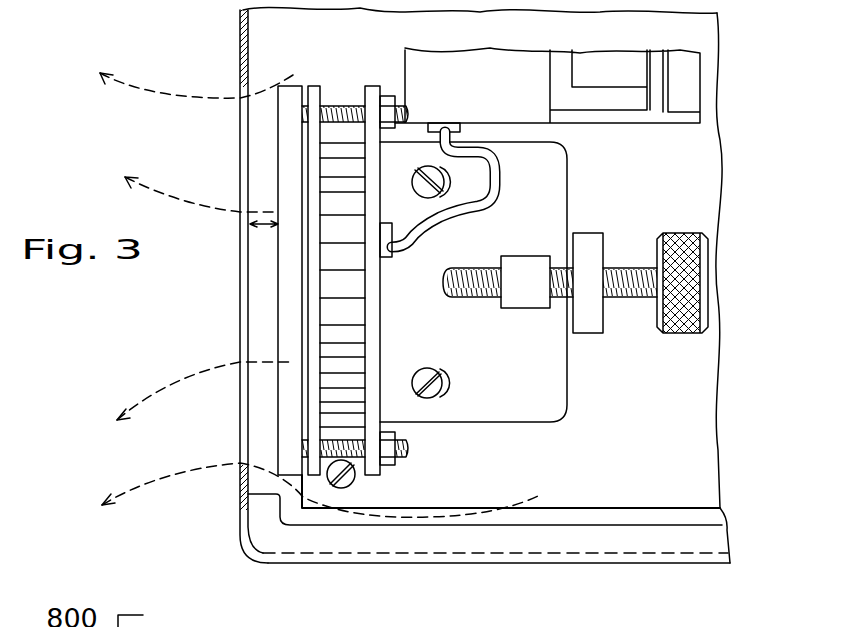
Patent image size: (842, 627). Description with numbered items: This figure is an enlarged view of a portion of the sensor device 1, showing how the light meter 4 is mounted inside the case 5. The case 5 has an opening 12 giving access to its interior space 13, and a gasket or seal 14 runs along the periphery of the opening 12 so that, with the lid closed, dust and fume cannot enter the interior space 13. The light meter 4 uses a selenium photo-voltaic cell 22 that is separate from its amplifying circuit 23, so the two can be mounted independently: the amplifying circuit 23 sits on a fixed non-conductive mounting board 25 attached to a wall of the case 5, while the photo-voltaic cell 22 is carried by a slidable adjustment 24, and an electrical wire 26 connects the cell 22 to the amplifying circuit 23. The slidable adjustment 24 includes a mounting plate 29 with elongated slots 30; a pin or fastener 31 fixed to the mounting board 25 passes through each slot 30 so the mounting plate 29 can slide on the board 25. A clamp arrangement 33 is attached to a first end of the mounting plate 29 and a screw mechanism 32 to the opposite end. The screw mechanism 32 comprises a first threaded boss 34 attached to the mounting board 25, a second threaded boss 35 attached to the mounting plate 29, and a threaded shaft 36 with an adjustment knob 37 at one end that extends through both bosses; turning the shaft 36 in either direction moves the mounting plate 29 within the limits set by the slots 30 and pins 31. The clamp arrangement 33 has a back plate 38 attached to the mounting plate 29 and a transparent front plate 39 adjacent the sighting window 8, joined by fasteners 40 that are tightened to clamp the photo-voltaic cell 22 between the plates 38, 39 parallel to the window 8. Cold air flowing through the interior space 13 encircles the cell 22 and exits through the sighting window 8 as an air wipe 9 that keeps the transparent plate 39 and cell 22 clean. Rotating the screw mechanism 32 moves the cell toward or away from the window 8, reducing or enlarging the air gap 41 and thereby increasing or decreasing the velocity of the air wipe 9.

The sensor device 1 is at (742, 66).
The light meter 4 is at (331, 157).
The case 5 is at (530, 563).
The sighting window 8 is at (240, 318).
The air wipe 9 is at (162, 472).
The opening 12 is at (604, 523).
The interior space 13 is at (610, 462).
The gasket or seal 14 is at (483, 543).
The photo-voltaic cell 22 is at (352, 310).
The amplifying circuit 23 is at (585, 105).
The slidable adjustment 24 is at (580, 377).
The non-conductive mounting board 25 is at (670, 464).
The electrical wire 26 is at (500, 172).
The mounting plate 29 is at (522, 405).
The elongated slots 30 is at (452, 383).
The pin or fastener 31 is at (420, 398).
The screw mechanism 32 is at (626, 265).
The clamp arrangement 33 is at (371, 467).
The first threaded boss 34 is at (590, 242).
The second threaded boss 35 is at (537, 308).
The threaded shaft 36 is at (623, 297).
The adjustment knob 37 is at (697, 272).
The back plate 38 is at (370, 293).
The transparent front plate 39 is at (283, 305).
The fasteners 40 is at (438, 465).
The air gap 41 is at (263, 225).